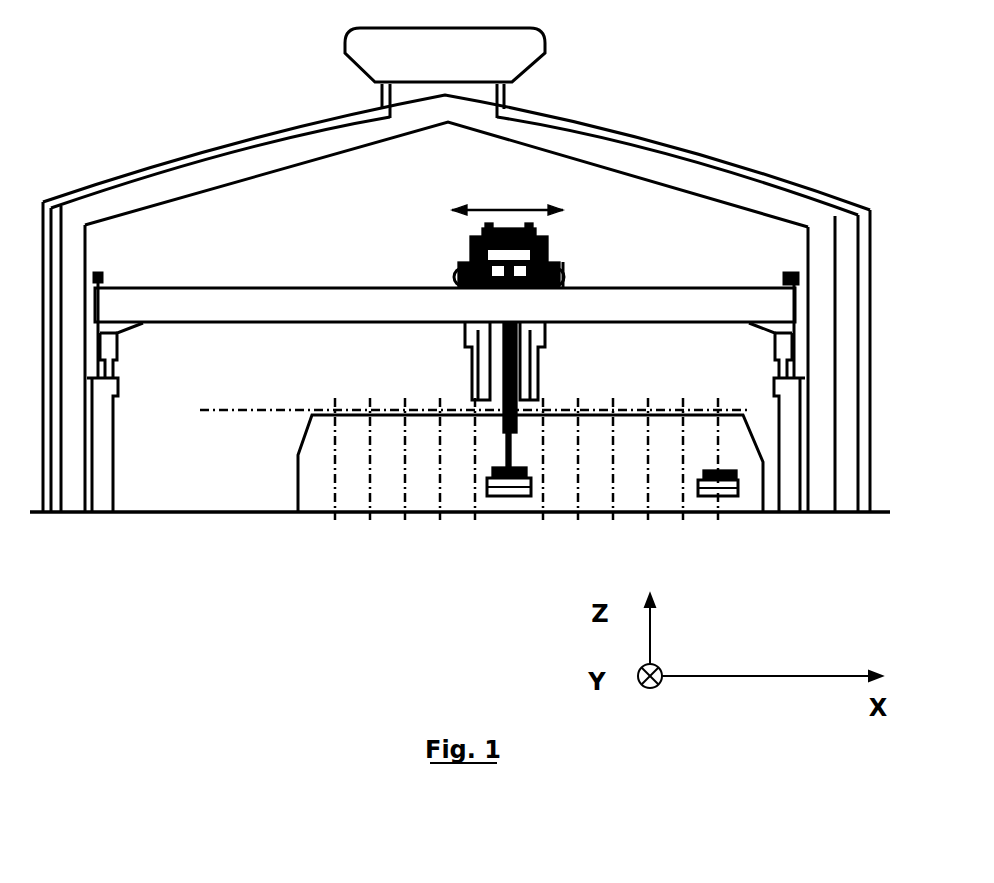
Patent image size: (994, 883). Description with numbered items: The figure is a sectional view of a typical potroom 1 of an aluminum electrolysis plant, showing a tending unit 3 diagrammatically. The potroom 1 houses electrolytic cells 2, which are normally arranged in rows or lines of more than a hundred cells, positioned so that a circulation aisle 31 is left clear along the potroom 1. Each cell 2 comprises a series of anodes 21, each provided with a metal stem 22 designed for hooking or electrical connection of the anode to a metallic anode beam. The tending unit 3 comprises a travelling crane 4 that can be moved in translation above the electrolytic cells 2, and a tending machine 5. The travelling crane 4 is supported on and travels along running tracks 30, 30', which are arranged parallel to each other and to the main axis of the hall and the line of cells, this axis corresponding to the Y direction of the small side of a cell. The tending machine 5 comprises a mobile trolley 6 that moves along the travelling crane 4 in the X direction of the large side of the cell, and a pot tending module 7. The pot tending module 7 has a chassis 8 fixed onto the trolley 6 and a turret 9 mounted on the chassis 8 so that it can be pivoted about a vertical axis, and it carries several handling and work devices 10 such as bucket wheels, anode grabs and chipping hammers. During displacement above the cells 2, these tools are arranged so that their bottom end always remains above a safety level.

The potroom 1 is at (727, 142).
The electrolytic cells 2 is at (318, 479).
The tending unit 3 is at (437, 257).
The travelling crane 4 is at (284, 300).
The tending machine 5 is at (565, 258).
The mobile trolley 6 is at (548, 222).
The pot tending module 7 is at (468, 358).
The chassis 8 is at (483, 236).
The turret 9 is at (470, 257).
The handling and work devices 10 is at (540, 378).
The anodes 21 is at (520, 512).
The metal stem 22 is at (510, 435).
The running track 30 is at (152, 392).
The running track 30' is at (733, 392).
The circulation aisle 31 is at (205, 513).